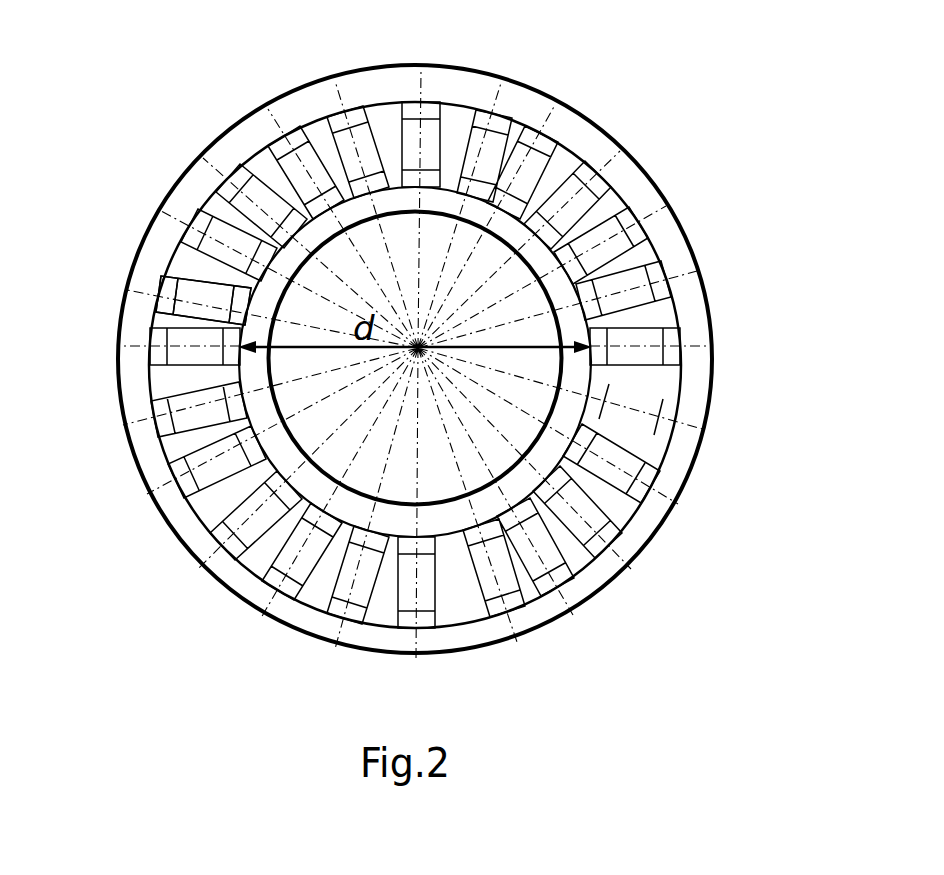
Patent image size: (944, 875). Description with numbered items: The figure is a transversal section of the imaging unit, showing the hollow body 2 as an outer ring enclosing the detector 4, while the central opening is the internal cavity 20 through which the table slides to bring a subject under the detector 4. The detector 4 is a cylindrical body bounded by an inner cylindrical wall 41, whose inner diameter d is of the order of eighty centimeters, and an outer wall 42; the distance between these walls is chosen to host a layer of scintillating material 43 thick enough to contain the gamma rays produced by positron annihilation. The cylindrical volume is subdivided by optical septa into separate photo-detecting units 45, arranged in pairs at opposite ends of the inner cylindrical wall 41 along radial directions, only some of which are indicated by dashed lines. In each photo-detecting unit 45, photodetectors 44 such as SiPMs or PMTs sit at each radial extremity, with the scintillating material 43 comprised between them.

The hollow body 2 is at (485, 72).
The detector 4 is at (306, 119).
The internal cavity 20 is at (415, 358).
The inner cylindrical wall 41 is at (203, 212).
The outer wall 42 is at (206, 288).
The scintillating material 43 is at (173, 280).
The photodetectors 44 is at (169, 277).
The photo-detecting units 45 is at (196, 310).